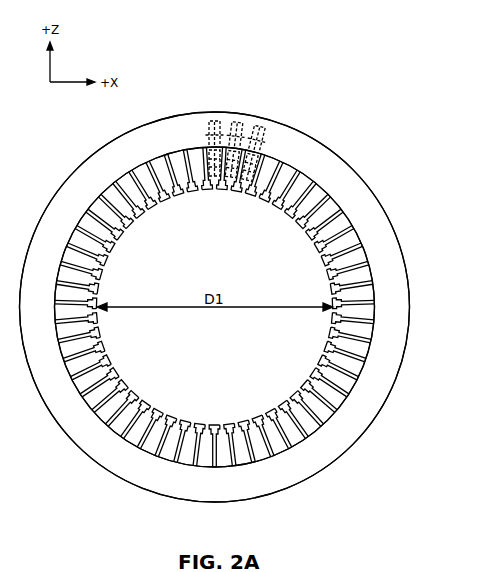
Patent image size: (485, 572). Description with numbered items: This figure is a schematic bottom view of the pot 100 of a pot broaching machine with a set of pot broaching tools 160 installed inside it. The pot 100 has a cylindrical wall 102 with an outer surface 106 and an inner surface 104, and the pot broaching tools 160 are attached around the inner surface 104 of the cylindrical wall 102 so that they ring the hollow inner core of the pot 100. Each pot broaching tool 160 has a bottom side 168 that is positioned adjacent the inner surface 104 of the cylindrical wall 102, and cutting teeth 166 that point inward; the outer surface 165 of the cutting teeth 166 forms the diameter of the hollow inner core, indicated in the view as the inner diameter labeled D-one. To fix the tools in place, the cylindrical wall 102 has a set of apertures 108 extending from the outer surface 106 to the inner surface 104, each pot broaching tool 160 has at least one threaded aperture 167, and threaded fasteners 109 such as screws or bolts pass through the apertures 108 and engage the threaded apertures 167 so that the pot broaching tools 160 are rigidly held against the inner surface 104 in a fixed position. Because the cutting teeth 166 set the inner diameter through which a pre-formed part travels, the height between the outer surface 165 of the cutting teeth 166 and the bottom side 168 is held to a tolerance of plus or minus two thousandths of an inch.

The pot 100 is at (78, 168).
The cylindrical wall 102 is at (360, 200).
The inner surface 104 is at (346, 226).
The outer surface 106 is at (400, 242).
The apertures 108 is at (262, 139).
The threaded fasteners 109 is at (275, 120).
The pot broaching tools 160 is at (323, 408).
The outer surface of the cutting teeth 165 is at (268, 413).
The cutting teeth 166 is at (288, 403).
The threaded aperture 167 is at (257, 163).
The bottom side 168 is at (327, 417).